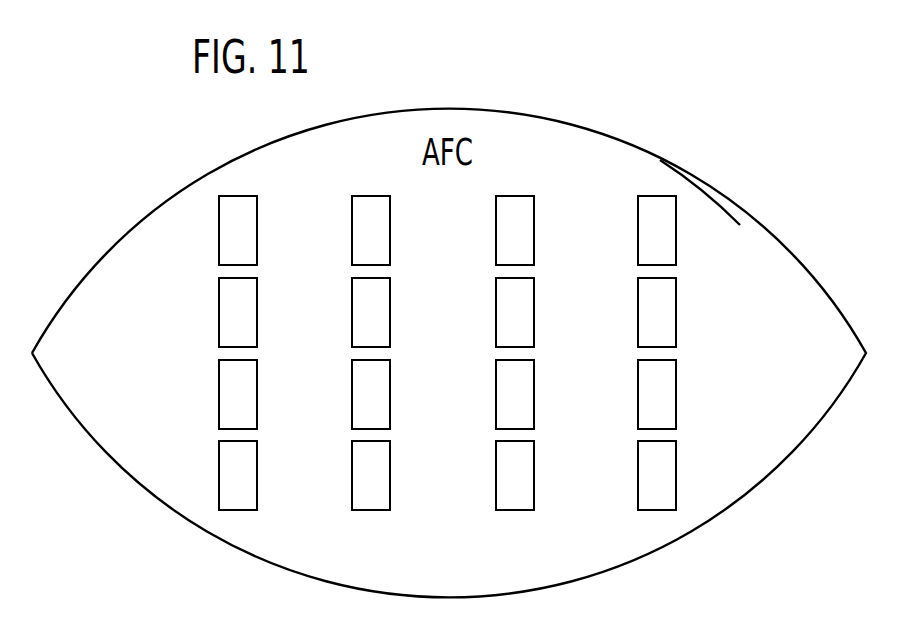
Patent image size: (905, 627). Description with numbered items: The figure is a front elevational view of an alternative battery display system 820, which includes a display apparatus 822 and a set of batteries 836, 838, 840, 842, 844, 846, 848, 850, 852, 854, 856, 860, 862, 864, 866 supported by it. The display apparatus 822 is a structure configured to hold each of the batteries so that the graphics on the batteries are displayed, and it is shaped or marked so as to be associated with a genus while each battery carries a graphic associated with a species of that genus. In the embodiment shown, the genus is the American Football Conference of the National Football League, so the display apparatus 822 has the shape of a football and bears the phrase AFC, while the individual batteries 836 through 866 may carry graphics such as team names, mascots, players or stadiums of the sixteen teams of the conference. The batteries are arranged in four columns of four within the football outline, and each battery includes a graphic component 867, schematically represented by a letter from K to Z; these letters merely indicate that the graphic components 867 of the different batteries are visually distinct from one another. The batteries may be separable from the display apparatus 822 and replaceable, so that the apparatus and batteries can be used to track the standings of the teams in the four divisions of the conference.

The battery display system 820 is at (100, 191).
The display apparatus 822 is at (699, 177).
The battery 836 is at (219, 232).
The battery 838 is at (219, 313).
The battery 840 is at (219, 395).
The battery 842 is at (219, 477).
The battery 844 is at (352, 233).
The battery 846 is at (352, 313).
The battery 848 is at (352, 395).
The battery 850 is at (352, 477).
The battery 852 is at (496, 233).
The battery 854 is at (496, 313).
The battery 856 is at (496, 395).
The battery 860 is at (638, 230).
The battery 862 is at (638, 313).
The battery 864 is at (638, 395).
The battery 866 is at (638, 477).
The graphic components 867 is at (240, 219).